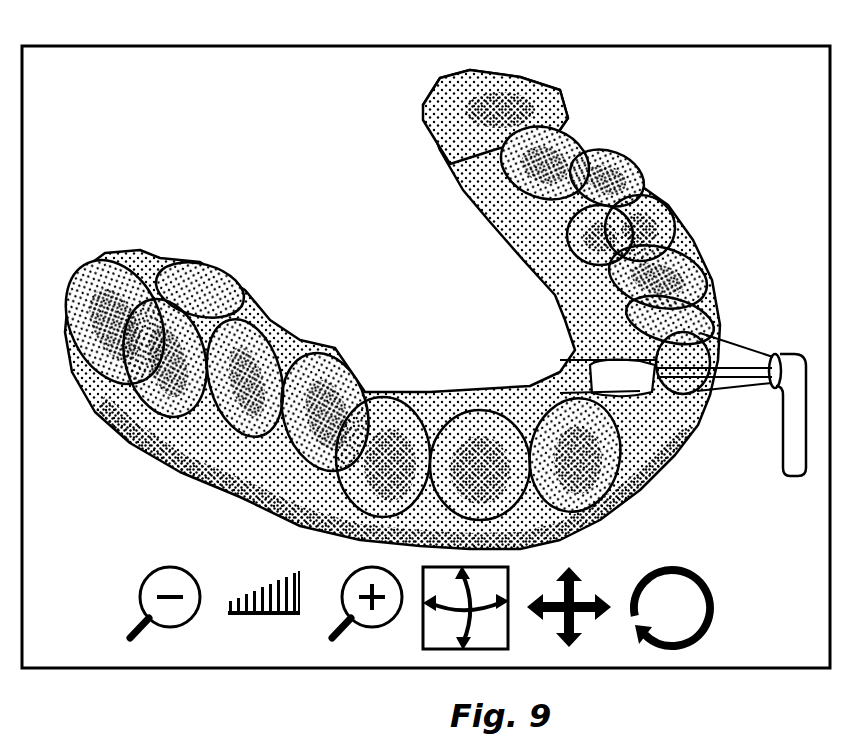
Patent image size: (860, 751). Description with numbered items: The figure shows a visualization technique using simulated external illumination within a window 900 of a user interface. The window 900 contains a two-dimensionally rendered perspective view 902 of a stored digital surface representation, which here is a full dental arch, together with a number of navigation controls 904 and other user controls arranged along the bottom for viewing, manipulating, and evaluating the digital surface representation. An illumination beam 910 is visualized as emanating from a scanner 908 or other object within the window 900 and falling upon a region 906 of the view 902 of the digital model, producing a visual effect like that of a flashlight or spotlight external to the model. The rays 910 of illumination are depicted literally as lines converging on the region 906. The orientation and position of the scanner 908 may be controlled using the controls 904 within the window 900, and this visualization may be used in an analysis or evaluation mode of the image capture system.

The window 900 is at (722, 46).
The perspective view 902 is at (728, 181).
The navigation controls 904 is at (720, 605).
The region 906 is at (656, 356).
The scanner 908 is at (785, 433).
The illumination beam 910 is at (736, 345).